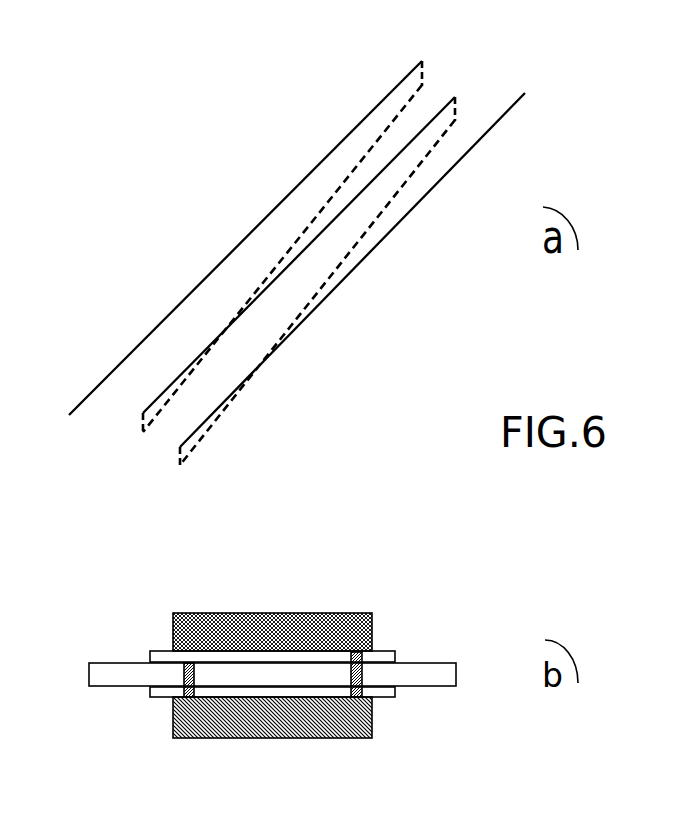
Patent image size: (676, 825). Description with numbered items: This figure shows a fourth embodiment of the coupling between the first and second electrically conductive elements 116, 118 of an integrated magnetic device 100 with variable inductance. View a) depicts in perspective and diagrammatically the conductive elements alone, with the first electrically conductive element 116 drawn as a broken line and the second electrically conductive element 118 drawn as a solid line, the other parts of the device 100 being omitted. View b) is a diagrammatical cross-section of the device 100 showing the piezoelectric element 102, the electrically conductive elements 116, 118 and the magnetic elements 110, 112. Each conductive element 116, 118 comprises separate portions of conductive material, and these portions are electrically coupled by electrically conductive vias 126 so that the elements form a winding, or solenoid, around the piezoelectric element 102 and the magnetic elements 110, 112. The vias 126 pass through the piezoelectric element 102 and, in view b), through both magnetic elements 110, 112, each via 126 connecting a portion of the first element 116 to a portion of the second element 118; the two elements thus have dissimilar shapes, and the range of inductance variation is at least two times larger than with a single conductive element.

The device 100 is at (380, 588).
The piezoelectric element 102 is at (95, 673).
The magnetic element 110 is at (388, 692).
The magnetic element 112 is at (157, 658).
The first electrically conductive element 116 is at (373, 222).
The second electrically conductive element 118 is at (262, 222).
The electrically conductive vias 126 is at (456, 104).